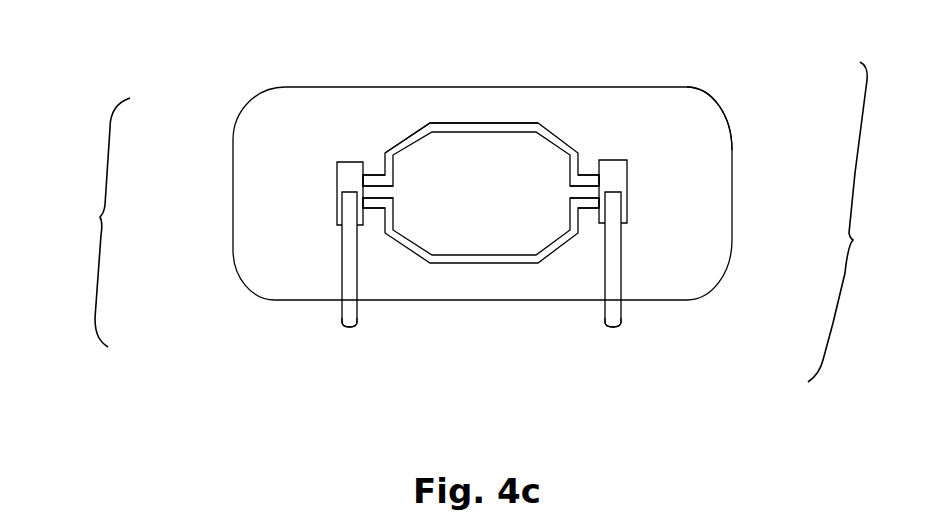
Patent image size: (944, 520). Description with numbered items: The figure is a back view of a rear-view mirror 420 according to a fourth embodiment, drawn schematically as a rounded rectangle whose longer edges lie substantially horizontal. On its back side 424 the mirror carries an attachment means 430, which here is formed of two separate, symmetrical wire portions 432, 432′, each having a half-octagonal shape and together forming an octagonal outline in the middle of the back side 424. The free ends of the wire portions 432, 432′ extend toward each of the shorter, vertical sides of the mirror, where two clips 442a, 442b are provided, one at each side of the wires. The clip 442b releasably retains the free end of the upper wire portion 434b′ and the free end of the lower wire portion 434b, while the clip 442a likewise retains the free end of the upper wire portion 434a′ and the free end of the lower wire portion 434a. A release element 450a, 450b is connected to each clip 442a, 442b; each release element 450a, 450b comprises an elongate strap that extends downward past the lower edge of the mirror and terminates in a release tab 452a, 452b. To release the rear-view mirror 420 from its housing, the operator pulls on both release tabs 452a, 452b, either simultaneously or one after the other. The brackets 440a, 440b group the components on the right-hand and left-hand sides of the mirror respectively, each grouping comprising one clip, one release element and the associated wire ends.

The rear-view mirror 420 is at (733, 125).
The back side 424 is at (684, 103).
The attachment means 430 is at (495, 123).
The wire portion 432 is at (492, 262).
The wire portion 432′ is at (452, 125).
The free end of the upper wire portion 434b′ is at (336, 180).
The free end of the lower wire portion 434b is at (336, 205).
The clip 442b is at (338, 180).
The release element 450b is at (350, 313).
The release tab 452b is at (348, 327).
The free end of the upper wire portion 434a′ is at (630, 179).
The free end of the lower wire portion 434a is at (627, 205).
The clip 442a is at (627, 212).
The release element 450a is at (618, 310).
The release tab 452a is at (612, 327).
The left antenna assembly 440b is at (78, 222).
The right antenna assembly 440a is at (865, 222).